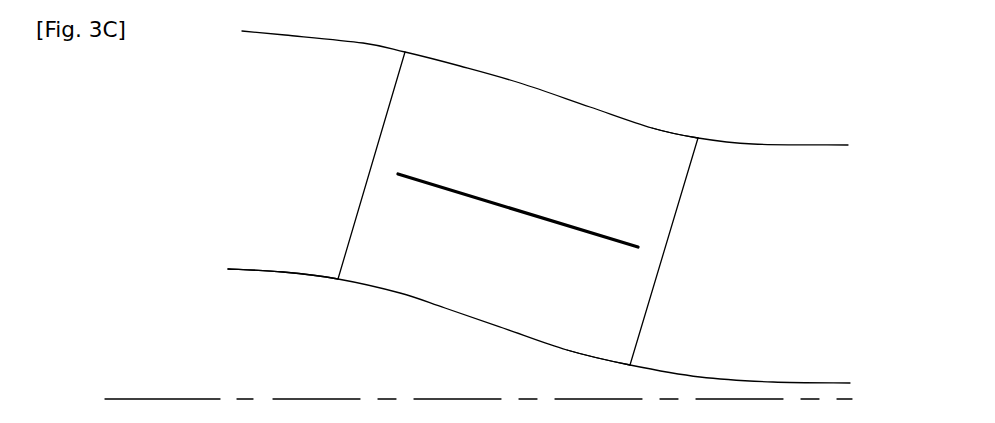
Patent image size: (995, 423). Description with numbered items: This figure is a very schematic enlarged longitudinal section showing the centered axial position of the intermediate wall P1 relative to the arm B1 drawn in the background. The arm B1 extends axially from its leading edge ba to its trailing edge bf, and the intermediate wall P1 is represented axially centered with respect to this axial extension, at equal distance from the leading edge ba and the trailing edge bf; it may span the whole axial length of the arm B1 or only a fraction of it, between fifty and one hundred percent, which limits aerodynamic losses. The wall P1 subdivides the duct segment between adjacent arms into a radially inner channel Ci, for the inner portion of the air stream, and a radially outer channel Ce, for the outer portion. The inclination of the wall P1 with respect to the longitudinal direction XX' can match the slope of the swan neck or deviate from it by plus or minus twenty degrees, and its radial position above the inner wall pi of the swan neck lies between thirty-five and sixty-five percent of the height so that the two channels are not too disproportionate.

The arm B1 is at (627, 148).
The leading edge ba is at (371, 163).
The trailing edge bf is at (667, 250).
The intermediate wall P1 is at (505, 203).
The inner wall of the swan neck pi is at (283, 271).
The outer channel Ce is at (652, 182).
The inner channel Ci is at (612, 307).
The longitudinal direction XX' is at (471, 362).